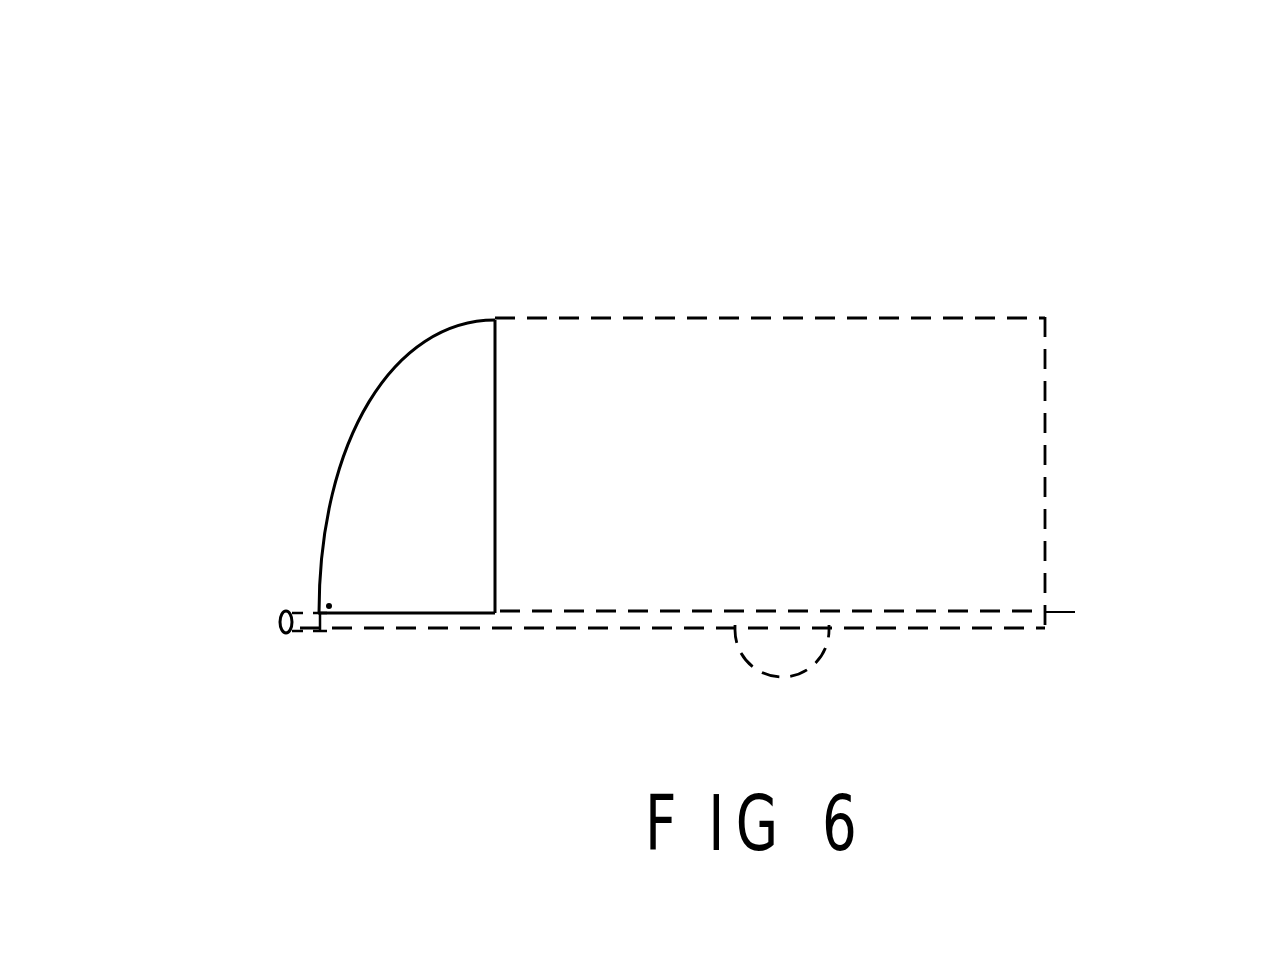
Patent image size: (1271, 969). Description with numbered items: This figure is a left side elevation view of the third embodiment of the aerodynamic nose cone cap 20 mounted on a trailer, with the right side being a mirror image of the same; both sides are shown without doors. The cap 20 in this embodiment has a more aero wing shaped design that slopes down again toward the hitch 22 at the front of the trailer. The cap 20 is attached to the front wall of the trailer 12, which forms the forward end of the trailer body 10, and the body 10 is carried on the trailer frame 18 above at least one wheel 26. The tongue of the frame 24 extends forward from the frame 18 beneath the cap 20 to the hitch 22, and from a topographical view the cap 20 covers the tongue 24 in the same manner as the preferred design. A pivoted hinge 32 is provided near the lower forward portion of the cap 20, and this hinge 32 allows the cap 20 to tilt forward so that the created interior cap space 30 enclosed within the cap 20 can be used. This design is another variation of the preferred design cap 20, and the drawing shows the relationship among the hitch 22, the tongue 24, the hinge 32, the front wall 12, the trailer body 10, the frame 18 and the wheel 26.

The trailer body 10 is at (932, 335).
The front wall of trailer 12 is at (497, 347).
The frame 18 is at (1045, 612).
The cap 20 is at (424, 340).
The hitch 22 is at (298, 610).
The tongue of frame 24 is at (400, 630).
The wheel 26 is at (828, 650).
The interior cap space 30 is at (415, 428).
The hinge 32 is at (330, 597).